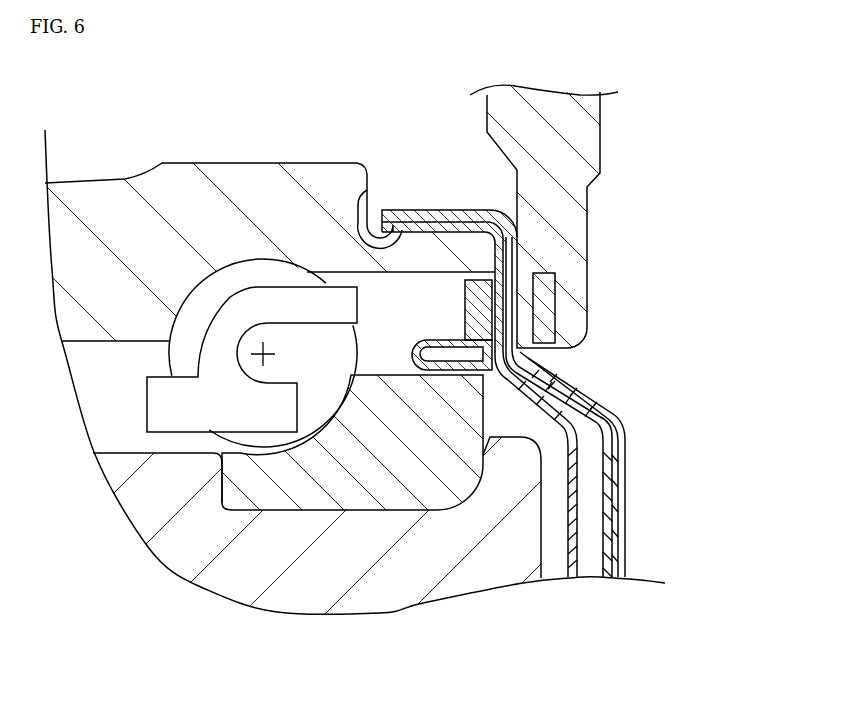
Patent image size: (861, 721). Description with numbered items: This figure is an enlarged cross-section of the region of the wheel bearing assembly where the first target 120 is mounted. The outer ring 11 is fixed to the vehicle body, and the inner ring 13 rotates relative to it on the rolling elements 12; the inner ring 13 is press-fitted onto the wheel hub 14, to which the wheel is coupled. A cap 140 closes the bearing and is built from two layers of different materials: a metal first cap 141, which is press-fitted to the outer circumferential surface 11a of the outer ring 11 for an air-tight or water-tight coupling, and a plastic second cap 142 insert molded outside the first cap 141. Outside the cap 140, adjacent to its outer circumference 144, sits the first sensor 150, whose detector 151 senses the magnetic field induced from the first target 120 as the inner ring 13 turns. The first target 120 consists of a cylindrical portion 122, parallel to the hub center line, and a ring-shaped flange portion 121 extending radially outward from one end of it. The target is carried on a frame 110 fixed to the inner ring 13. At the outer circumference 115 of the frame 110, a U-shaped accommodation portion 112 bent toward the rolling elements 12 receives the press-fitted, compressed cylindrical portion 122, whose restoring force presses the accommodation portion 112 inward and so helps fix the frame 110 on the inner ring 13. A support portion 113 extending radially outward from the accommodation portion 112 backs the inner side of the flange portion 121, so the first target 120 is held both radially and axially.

The outer ring 11 is at (232, 178).
The outer circumferential surface 11a is at (368, 192).
The rolling elements 12 is at (240, 277).
The inner ring 13 is at (293, 490).
The wheel hub 14 is at (382, 598).
The frame 110 is at (591, 407).
The accommodation portion 112 is at (428, 350).
The support portion 113 is at (508, 293).
The outer circumference 115 is at (520, 352).
The first target 120 is at (504, 275).
The flange portion 121 is at (501, 322).
The cylindrical portion 122 is at (345, 325).
The cap 140 is at (716, 490).
The first cap 141 is at (604, 407).
The second cap 142 is at (626, 552).
The outer circumference 144 is at (498, 246).
The first sensor 150 is at (609, 223).
The detector 151 is at (545, 300).